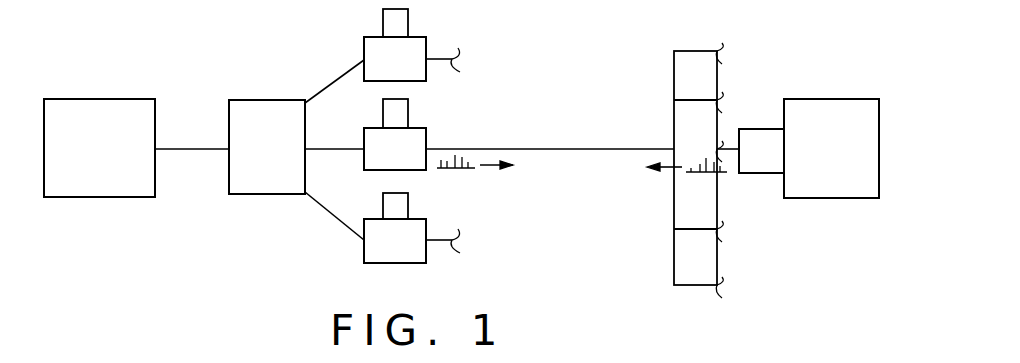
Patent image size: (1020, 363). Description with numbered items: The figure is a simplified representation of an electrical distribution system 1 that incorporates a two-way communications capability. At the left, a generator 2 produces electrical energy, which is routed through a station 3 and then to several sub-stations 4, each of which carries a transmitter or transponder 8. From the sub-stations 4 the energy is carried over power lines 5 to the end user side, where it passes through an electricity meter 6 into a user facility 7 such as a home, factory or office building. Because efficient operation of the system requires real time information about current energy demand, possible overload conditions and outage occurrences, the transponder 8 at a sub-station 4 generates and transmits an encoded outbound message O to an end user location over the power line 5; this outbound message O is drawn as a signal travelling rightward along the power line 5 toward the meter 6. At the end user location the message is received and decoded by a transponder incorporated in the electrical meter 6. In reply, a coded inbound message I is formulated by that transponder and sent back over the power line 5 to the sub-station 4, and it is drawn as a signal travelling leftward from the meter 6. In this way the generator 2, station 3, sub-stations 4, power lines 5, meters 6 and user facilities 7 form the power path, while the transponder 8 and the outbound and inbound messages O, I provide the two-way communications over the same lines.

The electrical distribution system 1 is at (241, 252).
The generator 2 is at (106, 159).
The station 3 is at (266, 156).
The sub-station 4 is at (400, 70).
The power line 5 is at (543, 149).
The electricity meter 6 is at (767, 159).
The user facility 7 is at (836, 159).
The transmitter or transponder 8 is at (400, 34).
The outbound message O is at (462, 172).
The inbound message I is at (714, 174).